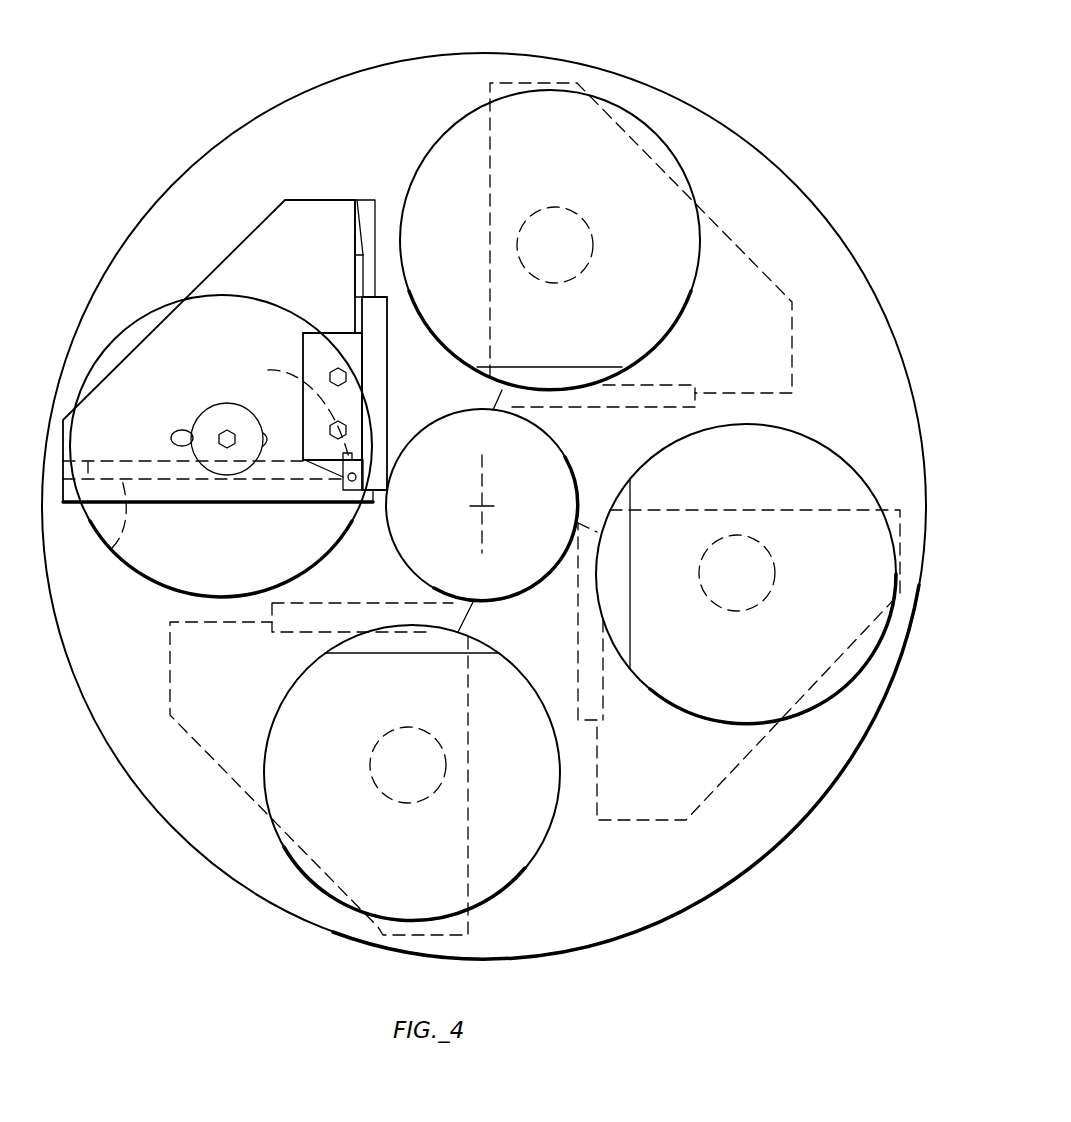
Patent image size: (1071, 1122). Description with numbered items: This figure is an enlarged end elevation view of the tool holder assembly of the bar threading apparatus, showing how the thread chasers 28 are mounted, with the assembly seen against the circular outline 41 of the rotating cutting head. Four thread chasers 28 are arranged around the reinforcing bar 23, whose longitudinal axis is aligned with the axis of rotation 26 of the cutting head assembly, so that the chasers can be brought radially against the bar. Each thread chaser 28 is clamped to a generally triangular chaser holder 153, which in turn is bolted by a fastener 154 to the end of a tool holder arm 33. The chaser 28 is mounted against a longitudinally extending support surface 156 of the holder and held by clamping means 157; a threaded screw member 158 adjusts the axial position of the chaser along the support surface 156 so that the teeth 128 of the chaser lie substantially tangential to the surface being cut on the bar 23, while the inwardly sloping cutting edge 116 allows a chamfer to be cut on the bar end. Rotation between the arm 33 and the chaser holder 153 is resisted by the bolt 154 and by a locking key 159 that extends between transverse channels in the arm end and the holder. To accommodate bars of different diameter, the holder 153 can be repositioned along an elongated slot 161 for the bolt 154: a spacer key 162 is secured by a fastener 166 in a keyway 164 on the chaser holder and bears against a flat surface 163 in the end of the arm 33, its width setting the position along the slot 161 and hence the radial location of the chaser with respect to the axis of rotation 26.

The rotary turret plate 41 is at (795, 181).
The chaser holder 153 is at (237, 249).
The thread chaser 28 is at (390, 398).
The tool holder arm 33 is at (134, 571).
The flat surface 163 is at (552, 367).
The reinforcing bar 23 is at (557, 443).
The axis of rotation 26 is at (483, 500).
The cutting edge 116 is at (389, 492).
The teeth 128 is at (389, 515).
The clamping means 157 is at (322, 350).
The support surface 156 is at (375, 210).
The threaded screw member 158 is at (372, 238).
The fastener 154 is at (200, 415).
The elongated slot 161 is at (172, 440).
The locking key 159 is at (112, 548).
The keyway 164 is at (287, 414).
The fastener 166 is at (350, 475).
The spacer key 162 is at (345, 490).